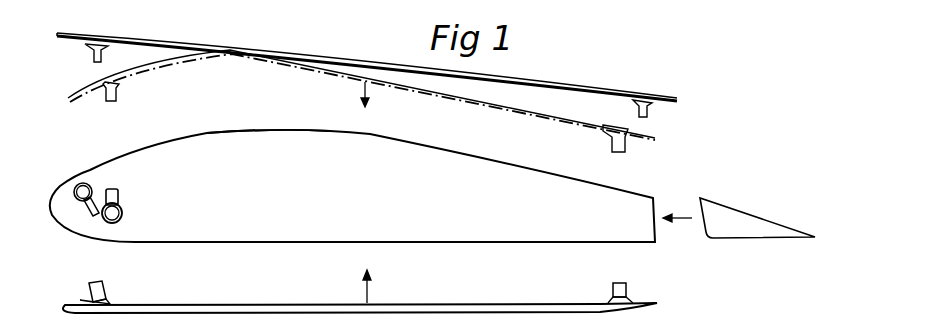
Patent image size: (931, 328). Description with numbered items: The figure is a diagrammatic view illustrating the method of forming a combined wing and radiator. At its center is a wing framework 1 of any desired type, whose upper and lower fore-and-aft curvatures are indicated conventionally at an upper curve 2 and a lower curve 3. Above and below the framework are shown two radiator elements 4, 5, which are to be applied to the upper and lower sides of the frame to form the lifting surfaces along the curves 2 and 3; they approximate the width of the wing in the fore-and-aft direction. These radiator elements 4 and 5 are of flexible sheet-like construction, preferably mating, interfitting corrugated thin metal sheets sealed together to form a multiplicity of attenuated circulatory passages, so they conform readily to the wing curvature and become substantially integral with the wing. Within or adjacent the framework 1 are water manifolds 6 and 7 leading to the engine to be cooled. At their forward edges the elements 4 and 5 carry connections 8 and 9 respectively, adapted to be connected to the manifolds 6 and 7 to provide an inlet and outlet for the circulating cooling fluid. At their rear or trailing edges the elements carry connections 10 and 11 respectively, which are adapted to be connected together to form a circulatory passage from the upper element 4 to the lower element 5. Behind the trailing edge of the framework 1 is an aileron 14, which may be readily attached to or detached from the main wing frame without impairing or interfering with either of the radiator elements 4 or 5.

The wing framework 1 is at (352, 186).
The upper curvature of wing frame 2 is at (312, 133).
The lower curvature of wing frame 3 is at (343, 241).
The upper radiator element 4 is at (228, 46).
The lower radiator element 5 is at (300, 304).
The water manifold 6 is at (90, 183).
The water manifold 7 is at (119, 198).
The forward connection of upper radiator element 8 is at (88, 46).
The forward connection of lower radiator element 9 is at (107, 292).
The rear connection of upper radiator element 10 is at (653, 108).
The rear connection of lower radiator element 11 is at (628, 289).
The aileron 14 is at (745, 238).